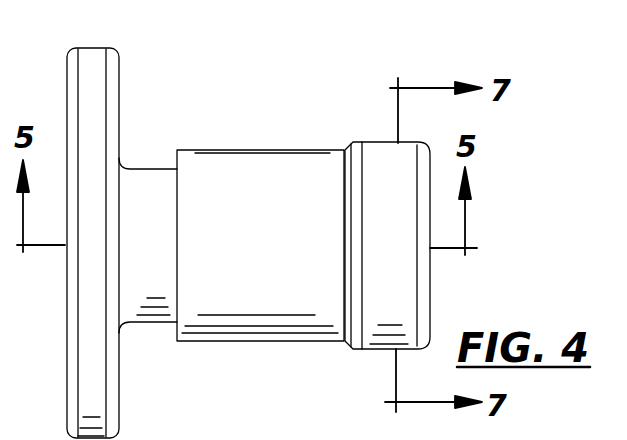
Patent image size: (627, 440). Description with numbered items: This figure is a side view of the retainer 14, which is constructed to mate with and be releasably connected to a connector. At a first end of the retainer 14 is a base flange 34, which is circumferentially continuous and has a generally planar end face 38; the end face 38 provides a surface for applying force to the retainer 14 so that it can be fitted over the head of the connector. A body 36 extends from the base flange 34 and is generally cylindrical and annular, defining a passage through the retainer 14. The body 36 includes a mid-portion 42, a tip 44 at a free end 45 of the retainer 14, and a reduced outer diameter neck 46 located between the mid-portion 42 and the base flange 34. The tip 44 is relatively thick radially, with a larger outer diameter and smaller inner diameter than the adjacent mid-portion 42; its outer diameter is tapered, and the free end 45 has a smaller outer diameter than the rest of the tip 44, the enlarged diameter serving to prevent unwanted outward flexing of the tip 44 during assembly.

The retainer 14 is at (446, 60).
The base flange 34 is at (112, 72).
The body 36 is at (259, 360).
The end face 38 is at (67, 75).
The mid-portion 42 is at (237, 163).
The tip 44 is at (377, 152).
The free end 45 is at (430, 290).
The neck 46 is at (148, 168).